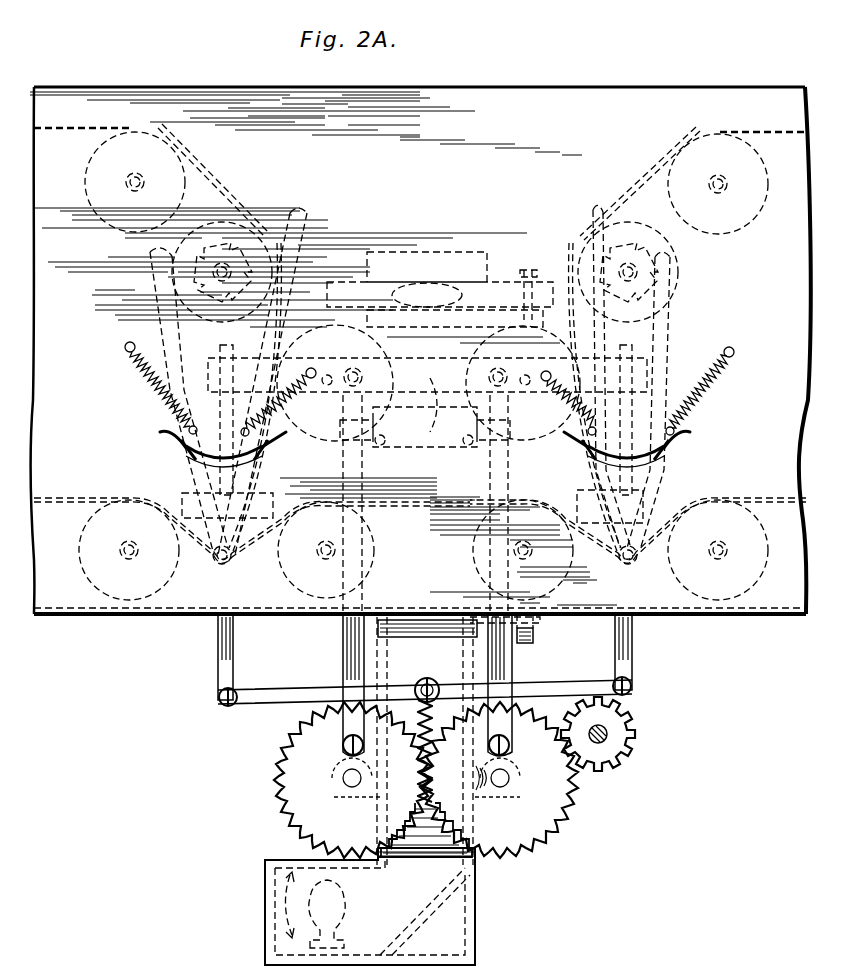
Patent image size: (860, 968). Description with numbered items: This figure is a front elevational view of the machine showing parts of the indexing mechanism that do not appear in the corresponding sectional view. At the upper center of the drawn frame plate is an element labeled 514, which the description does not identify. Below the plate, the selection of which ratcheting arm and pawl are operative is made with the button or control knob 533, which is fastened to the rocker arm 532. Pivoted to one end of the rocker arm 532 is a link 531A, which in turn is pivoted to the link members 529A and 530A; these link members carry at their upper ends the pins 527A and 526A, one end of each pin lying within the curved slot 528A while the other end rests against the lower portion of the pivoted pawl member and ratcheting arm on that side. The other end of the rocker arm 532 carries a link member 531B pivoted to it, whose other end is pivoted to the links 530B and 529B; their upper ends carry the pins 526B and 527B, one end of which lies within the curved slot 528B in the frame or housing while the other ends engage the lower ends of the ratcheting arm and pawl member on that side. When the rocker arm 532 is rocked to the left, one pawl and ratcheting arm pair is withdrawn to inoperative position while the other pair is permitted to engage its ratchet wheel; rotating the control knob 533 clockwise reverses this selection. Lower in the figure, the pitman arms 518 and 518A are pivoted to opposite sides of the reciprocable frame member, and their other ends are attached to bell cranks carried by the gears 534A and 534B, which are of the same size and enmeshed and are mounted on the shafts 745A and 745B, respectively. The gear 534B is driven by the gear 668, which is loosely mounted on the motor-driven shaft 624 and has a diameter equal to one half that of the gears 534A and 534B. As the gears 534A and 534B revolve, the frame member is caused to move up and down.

The central film gate mechanism 514 is at (440, 342).
The pitman arm 518 is at (345, 658).
The pitman arm 518A is at (505, 659).
The pin 526A is at (268, 452).
The pin 526B is at (577, 438).
The pin 527A is at (183, 450).
The pin 527B is at (683, 448).
The curved slot 528A is at (158, 428).
The curved slot 528B is at (688, 438).
The link member 529A is at (192, 482).
The link member 529B is at (650, 483).
The link member 530A is at (267, 473).
The link member 530B is at (596, 478).
The link 531A is at (230, 626).
The link member 531B is at (632, 645).
The rocker arm 532 is at (327, 682).
The button or control knob 533 is at (440, 668).
The gear 534A is at (292, 775).
The gear 534B is at (583, 797).
The shaft 624 is at (600, 727).
The gear 668 is at (613, 733).
The shaft 745A is at (352, 786).
The shaft 745B is at (505, 785).